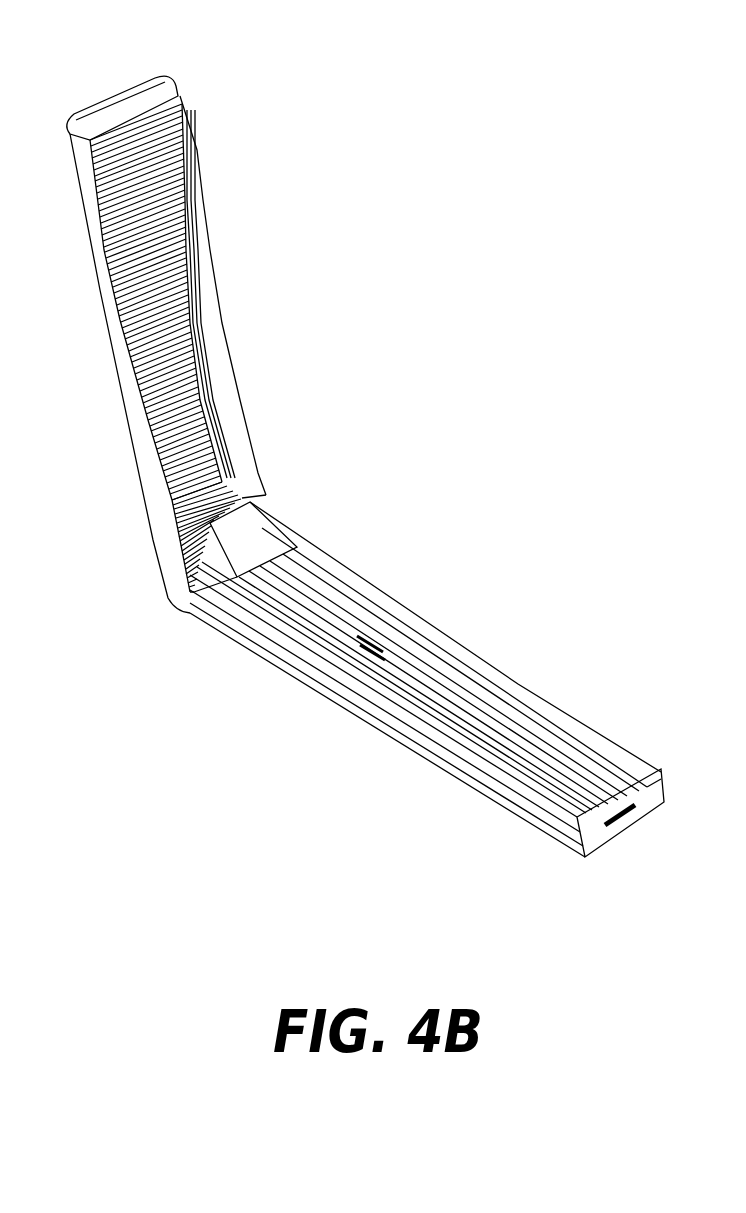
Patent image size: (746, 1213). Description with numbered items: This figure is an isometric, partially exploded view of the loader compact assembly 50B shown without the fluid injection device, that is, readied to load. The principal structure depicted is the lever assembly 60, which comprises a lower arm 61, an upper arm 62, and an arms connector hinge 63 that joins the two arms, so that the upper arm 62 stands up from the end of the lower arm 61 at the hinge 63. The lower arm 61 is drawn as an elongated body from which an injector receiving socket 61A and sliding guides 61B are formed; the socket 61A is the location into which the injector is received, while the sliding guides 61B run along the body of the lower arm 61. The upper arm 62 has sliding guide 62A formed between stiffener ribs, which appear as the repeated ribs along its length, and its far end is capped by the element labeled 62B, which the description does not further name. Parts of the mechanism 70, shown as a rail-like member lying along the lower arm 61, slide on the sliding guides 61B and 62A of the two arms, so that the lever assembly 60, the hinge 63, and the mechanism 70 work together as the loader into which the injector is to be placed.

The loader compact assembly 50B is at (525, 137).
The lever assembly 60 is at (197, 173).
The upper arm 62 is at (213, 262).
The sliding guide 62A is at (200, 342).
The end cap 62B is at (130, 80).
The arms connector hinge 63 is at (188, 610).
The mechanism 70 is at (343, 556).
The lower arm 61 is at (373, 712).
The injector receiving socket 61A is at (477, 723).
The sliding guides 61B is at (517, 702).